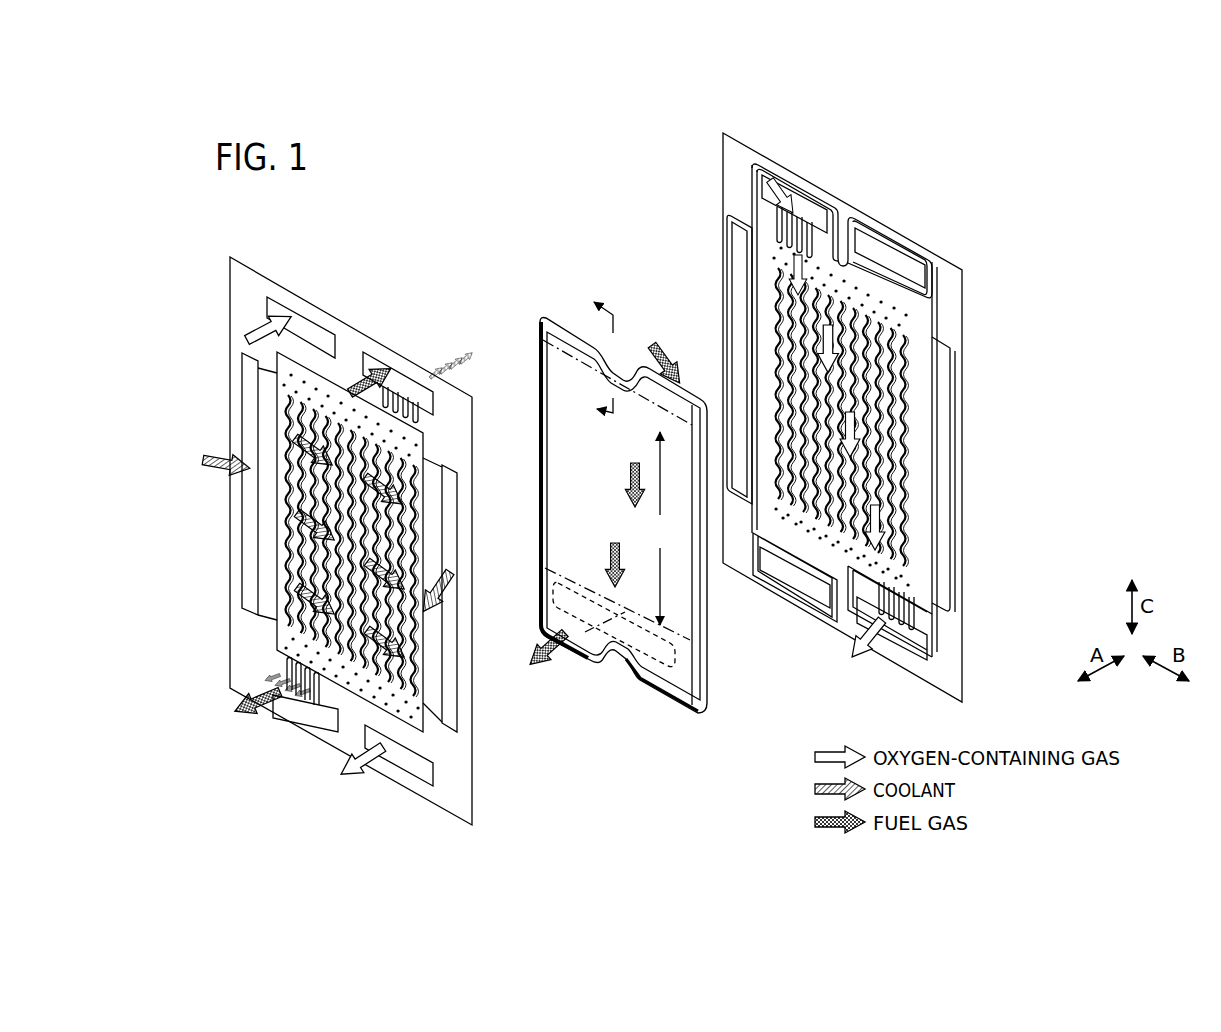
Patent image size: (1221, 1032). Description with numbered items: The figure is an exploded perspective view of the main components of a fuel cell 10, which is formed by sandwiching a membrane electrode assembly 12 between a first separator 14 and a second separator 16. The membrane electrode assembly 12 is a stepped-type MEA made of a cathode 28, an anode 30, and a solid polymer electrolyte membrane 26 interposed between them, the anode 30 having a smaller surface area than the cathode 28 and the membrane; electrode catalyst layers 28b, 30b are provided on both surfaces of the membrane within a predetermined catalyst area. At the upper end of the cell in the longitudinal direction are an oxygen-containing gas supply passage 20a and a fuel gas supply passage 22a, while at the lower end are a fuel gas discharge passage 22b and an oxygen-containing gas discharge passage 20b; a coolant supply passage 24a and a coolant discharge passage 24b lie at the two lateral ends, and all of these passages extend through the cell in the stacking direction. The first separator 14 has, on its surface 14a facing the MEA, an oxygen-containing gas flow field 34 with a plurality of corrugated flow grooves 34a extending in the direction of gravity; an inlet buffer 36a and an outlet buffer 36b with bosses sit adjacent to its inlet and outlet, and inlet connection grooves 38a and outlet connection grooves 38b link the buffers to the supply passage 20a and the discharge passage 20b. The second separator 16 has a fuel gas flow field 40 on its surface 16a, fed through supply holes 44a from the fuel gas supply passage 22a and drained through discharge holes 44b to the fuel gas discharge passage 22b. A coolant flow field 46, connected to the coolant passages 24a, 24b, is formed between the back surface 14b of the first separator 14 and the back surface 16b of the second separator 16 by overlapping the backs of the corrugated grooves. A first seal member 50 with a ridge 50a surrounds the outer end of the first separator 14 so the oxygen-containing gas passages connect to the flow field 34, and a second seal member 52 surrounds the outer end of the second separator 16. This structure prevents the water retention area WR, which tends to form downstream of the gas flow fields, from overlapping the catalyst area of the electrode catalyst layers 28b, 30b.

The fuel cell 10 is at (394, 175).
The membrane electrode assembly 12 is at (538, 316).
The first separator 14 is at (722, 133).
The surface of the first separator 14a is at (957, 663).
The surface of the first separator 14b is at (957, 683).
The second separator 16 is at (230, 257).
The surface of the second separator 16a is at (450, 800).
The surface of the second separator 16b is at (449, 783).
The oxygen-containing gas supply passage 20a is at (318, 333).
The oxygen-containing gas discharge passage 20b is at (417, 770).
The fuel gas supply passage 22a is at (413, 390).
The fuel gas discharge passage 22b is at (321, 710).
The coolant supply passage 24a is at (248, 383).
The coolant discharge passage 24b is at (452, 520).
The solid polymer electrolyte membrane 26 is at (691, 716).
The cathode 28 is at (708, 617).
The electrode catalyst layer 28b is at (594, 722).
The anode 30 is at (662, 680).
The electrode catalyst layer 30b is at (598, 630).
The oxygen-containing gas flow field 34 is at (788, 327).
The corrugated flow grooves 34a is at (910, 405).
The inlet buffer 36a is at (897, 313).
The outlet buffer 36b is at (912, 575).
The inlet connection grooves 38a is at (777, 223).
The outlet connection grooves 38b is at (858, 598).
The fuel gas flow field 40 is at (297, 507).
The supply holes 44a is at (423, 433).
The discharge holes 44b is at (278, 658).
The coolant flow field 46 is at (297, 465).
The first seal member 50 is at (965, 625).
The ridge 50a is at (753, 523).
The second seal member 52 is at (472, 752).
The water retention area WR is at (556, 600).